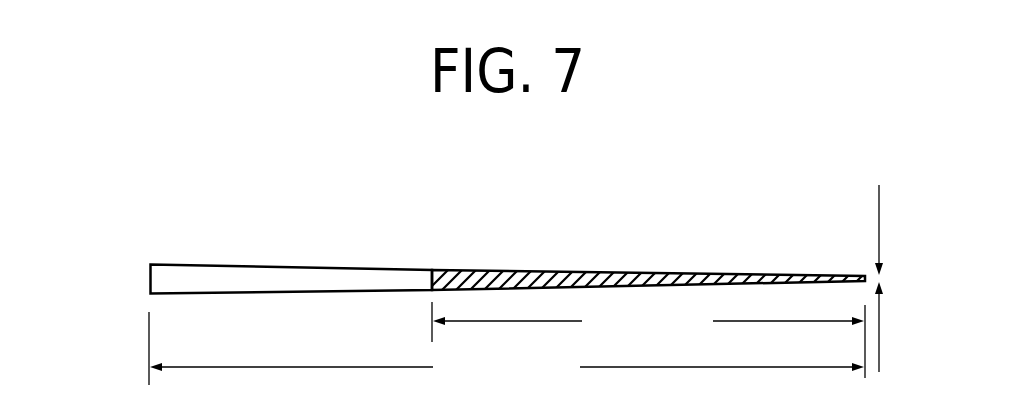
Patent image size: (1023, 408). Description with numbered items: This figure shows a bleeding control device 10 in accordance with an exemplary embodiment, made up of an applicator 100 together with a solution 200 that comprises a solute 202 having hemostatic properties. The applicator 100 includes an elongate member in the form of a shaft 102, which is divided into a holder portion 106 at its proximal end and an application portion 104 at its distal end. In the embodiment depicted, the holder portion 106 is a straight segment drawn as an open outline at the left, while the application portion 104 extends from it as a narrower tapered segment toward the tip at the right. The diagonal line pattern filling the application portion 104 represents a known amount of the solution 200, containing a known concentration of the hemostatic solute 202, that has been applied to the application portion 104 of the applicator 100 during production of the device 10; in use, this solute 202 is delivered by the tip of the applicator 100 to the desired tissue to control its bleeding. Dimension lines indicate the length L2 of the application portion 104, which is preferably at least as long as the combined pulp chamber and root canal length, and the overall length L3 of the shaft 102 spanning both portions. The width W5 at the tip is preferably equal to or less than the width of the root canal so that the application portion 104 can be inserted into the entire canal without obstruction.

The bleeding control device 10 is at (676, 90).
The applicator 100 is at (818, 144).
The shaft 102 is at (158, 176).
The application portion 104 is at (864, 238).
The holder portion 106 is at (431, 238).
The solution 200 is at (486, 270).
The solute 202 is at (597, 272).
The width W5 is at (907, 278).
The length of the application portion L2 is at (648, 340).
The length L3 is at (506, 348).